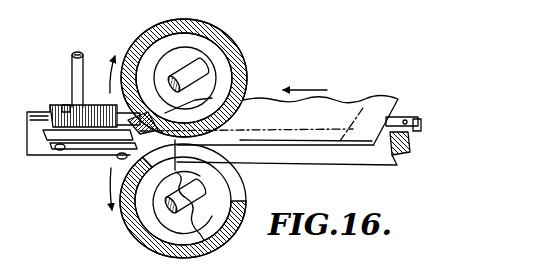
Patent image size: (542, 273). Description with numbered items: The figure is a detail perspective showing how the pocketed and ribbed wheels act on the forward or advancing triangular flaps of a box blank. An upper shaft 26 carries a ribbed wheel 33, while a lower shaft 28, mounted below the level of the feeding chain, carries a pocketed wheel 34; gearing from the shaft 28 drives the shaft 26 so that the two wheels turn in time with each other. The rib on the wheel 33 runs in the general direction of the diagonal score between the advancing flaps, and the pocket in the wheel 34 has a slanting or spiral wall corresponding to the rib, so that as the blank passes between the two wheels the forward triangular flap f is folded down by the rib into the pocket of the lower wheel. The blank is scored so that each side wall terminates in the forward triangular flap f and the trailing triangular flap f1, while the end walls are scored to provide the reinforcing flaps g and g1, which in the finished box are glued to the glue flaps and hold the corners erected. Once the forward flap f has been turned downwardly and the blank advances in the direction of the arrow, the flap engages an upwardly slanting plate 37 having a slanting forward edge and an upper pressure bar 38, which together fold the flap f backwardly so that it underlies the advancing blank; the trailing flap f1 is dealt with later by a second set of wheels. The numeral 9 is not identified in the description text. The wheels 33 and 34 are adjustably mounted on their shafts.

The shaft 26 is at (179, 73).
The shaft 28 is at (207, 240).
The ribbed wheel 33 is at (243, 58).
The pocketed wheel 34 is at (246, 192).
The upwardly slanting plate 37 is at (87, 140).
The upper pressure bar 38 is at (90, 117).
The base 9 is at (3, 265).
The triangular portion f is at (178, 178).
The triangular portion f1 is at (334, 145).
The reinforcing flap g is at (118, 140).
The reinforcing flap g1 is at (376, 147).